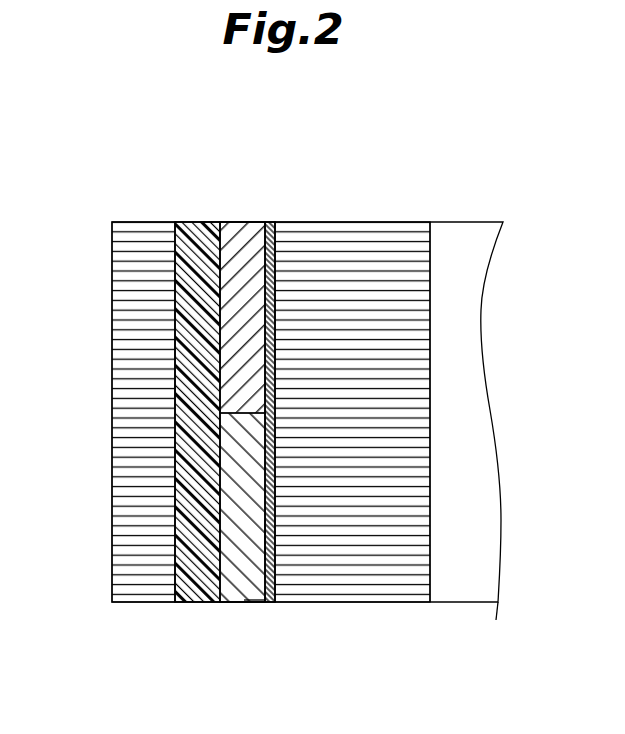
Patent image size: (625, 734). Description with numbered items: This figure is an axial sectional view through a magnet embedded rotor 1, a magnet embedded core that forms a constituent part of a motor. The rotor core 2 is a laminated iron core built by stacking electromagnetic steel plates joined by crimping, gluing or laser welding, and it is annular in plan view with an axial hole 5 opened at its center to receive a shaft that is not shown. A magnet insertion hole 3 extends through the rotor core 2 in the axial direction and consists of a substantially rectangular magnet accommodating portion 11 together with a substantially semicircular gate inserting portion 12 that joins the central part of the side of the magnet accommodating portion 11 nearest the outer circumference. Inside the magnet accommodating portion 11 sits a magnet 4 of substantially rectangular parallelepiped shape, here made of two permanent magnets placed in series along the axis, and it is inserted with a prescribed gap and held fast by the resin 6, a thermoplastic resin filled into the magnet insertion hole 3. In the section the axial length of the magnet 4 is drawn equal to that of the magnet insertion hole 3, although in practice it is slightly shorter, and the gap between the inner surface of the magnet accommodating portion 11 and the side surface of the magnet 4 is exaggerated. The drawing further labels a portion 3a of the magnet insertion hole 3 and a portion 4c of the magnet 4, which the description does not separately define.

The magnet embedded rotor 1 is at (366, 180).
The rotor core 2 is at (104, 257).
The magnet insertion hole 3 is at (258, 262).
The electrode surface 3a is at (265, 530).
The magnet 4 is at (178, 436).
The electrode layer portion 4c is at (244, 600).
The axial hole 5 is at (430, 247).
The resin 6 is at (190, 226).
The magnet accommodating portion 11 is at (252, 567).
The gate inserting portion 12 is at (182, 570).